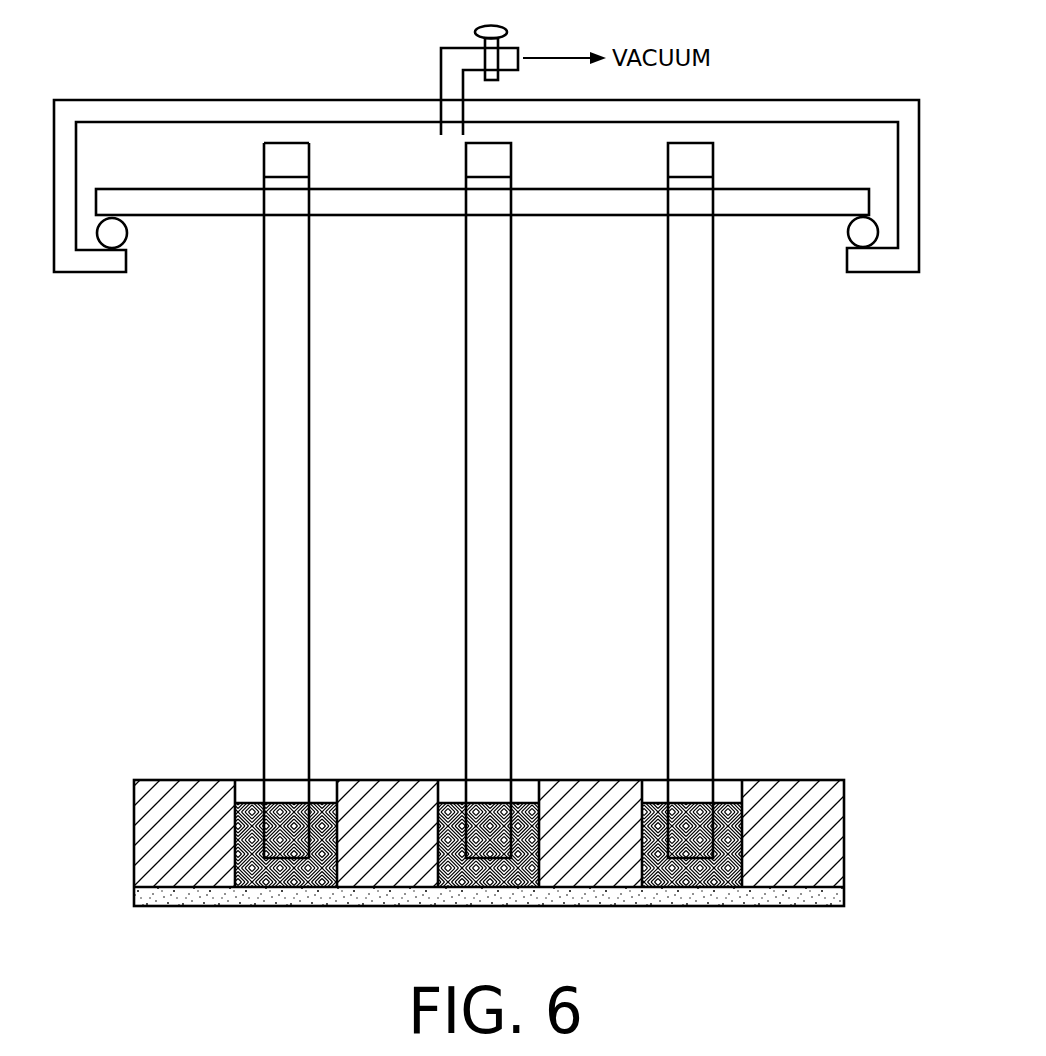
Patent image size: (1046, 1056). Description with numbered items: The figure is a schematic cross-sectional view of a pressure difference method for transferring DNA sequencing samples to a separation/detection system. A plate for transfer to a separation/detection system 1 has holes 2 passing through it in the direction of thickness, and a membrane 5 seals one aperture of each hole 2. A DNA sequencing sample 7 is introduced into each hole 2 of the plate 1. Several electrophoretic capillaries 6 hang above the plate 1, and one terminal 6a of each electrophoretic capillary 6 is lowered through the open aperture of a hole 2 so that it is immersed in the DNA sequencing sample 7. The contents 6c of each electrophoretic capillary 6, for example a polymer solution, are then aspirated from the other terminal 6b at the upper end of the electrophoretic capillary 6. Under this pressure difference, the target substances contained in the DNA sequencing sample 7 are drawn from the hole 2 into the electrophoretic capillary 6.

The plate for transfer to a separation/detection system 1 is at (801, 764).
The hole 2 is at (250, 793).
The membrane 5 is at (710, 908).
The electrophoretic capillary 6 is at (229, 504).
The terminal of electrophoretic capillary 6a is at (258, 888).
The other terminal of electrophoretic capillary 6b is at (282, 165).
The contents of electrophoretic capillary 6c is at (278, 477).
The DNA sequencing sample 7 is at (305, 888).